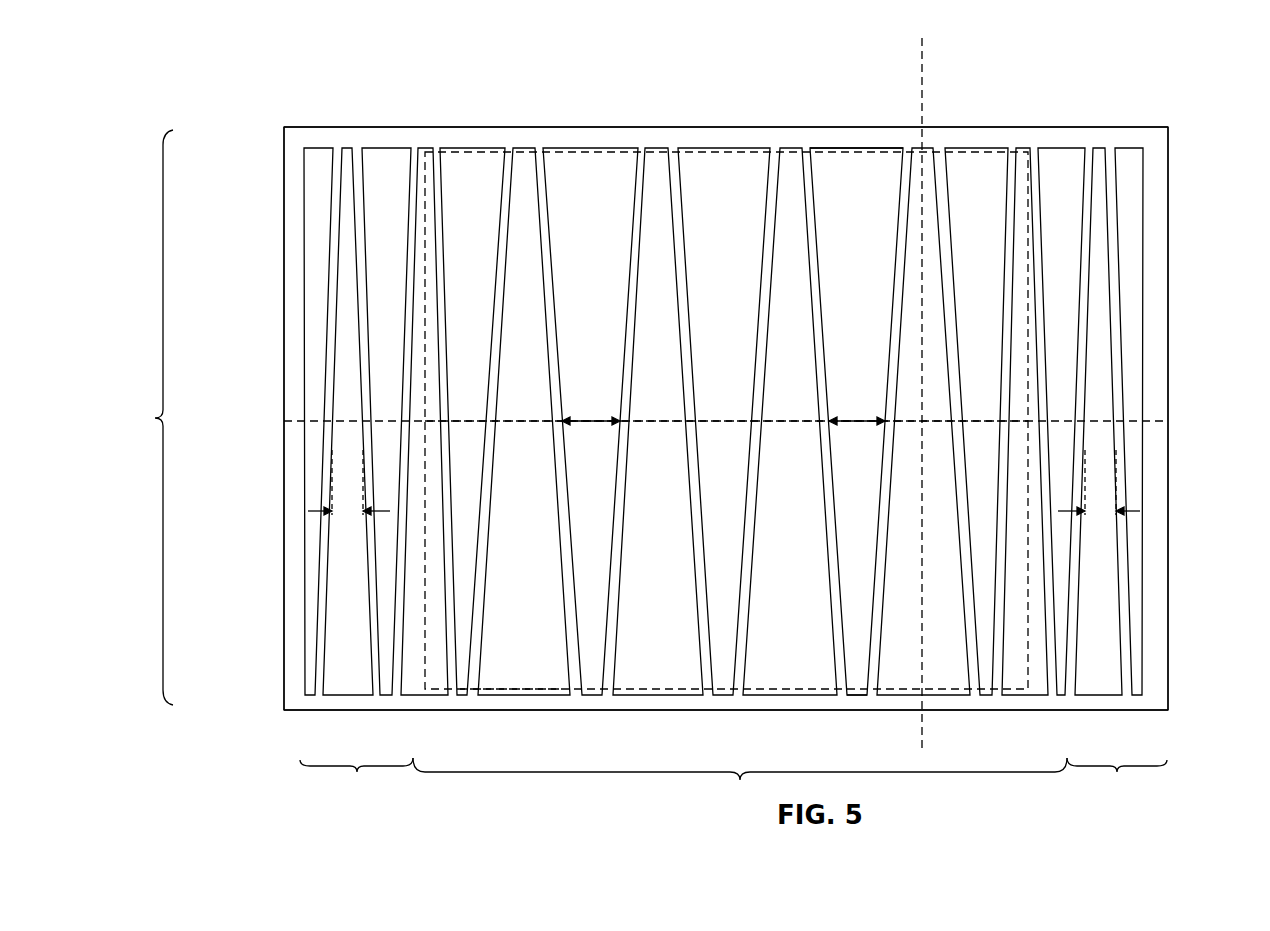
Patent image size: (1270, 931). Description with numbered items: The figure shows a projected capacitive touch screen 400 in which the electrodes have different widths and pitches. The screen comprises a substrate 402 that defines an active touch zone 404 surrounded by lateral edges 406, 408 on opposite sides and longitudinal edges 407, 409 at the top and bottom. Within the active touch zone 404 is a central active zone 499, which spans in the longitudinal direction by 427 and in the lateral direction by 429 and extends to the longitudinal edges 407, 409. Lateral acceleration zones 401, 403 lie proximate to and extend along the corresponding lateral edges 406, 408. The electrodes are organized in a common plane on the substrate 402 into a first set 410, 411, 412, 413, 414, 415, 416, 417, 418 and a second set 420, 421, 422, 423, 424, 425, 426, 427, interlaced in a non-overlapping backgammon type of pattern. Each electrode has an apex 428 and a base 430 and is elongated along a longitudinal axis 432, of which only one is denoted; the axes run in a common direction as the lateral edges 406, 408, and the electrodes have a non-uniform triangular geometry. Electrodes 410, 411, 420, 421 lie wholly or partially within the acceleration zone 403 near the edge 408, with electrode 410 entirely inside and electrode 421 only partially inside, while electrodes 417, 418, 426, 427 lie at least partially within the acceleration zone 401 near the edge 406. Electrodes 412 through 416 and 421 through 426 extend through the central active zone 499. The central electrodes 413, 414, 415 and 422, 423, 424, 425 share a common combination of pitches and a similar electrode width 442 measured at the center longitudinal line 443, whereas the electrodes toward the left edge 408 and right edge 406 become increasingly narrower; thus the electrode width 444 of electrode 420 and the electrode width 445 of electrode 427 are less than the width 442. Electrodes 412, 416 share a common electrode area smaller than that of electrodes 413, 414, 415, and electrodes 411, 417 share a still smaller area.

The projected capacitive touch screen 400 is at (308, 72).
The lateral acceleration zone 401 is at (1117, 781).
The substrate 402 is at (292, 163).
The lateral acceleration zone 403 is at (356, 781).
The active touch zone 404 is at (703, 452).
The lateral edge 406 is at (1170, 268).
The longitudinal edge 407 is at (1130, 127).
The lateral edge 408 is at (285, 292).
The longitudinal edge 409 is at (1128, 712).
The electrode 410 is at (313, 200).
The electrode 411 is at (382, 243).
The electrode 412 is at (449, 200).
The electrode 413 is at (568, 200).
The electrode 414 is at (704, 200).
The electrode 415 is at (836, 200).
The electrode 416 is at (957, 207).
The electrode 417 is at (1073, 178).
The electrode 418 is at (1130, 218).
The electrode 420 is at (340, 657).
The electrode 421 is at (413, 655).
The electrode 422 is at (501, 585).
The electrode 423 is at (639, 585).
The electrode 424 is at (768, 585).
The electrode 425 is at (921, 637).
The electrode 426 is at (1035, 653).
The electrode 427 is at (1105, 645).
The apex 428 is at (923, 148).
The lateral span of central active zone 429 is at (740, 783).
The base 430 is at (855, 148).
The longitudinal axis 432 is at (925, 78).
The electrode width 442 is at (583, 421).
The center longitudinal line 443 is at (1170, 421).
The electrode width 444 is at (308, 511).
The electrode width 445 is at (1140, 511).
The central active zone 499 is at (495, 689).